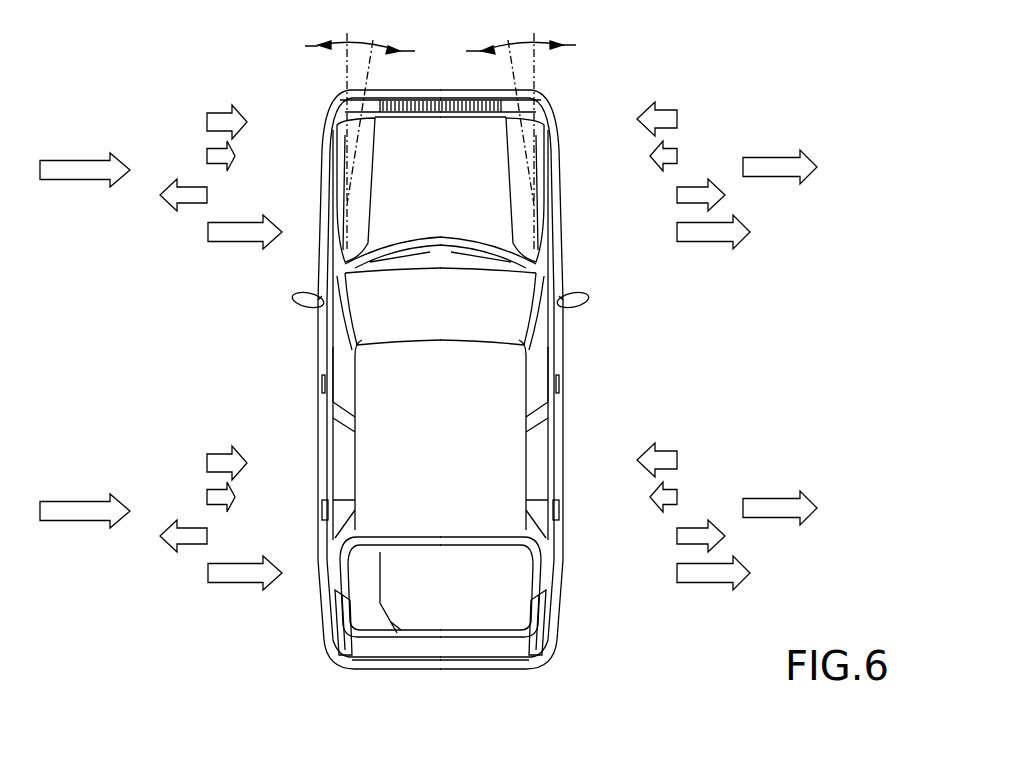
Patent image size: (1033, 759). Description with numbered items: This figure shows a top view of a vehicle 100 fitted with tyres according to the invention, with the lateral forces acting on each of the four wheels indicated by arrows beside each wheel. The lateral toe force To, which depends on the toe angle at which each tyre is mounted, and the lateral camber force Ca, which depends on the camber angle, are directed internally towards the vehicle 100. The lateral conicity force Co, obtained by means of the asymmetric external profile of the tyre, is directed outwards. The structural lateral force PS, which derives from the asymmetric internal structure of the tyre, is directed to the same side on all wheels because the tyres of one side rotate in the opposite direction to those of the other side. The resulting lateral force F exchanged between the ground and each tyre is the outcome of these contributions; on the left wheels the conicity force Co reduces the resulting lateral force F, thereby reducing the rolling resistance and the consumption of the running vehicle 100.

The vehicle 100 is at (310, 72).
The resulting lateral force F is at (82, 171).
The lateral toe force To is at (220, 113).
The lateral camber force Ca is at (207, 158).
The lateral conicity force Co is at (190, 206).
The structural lateral force PS is at (248, 223).